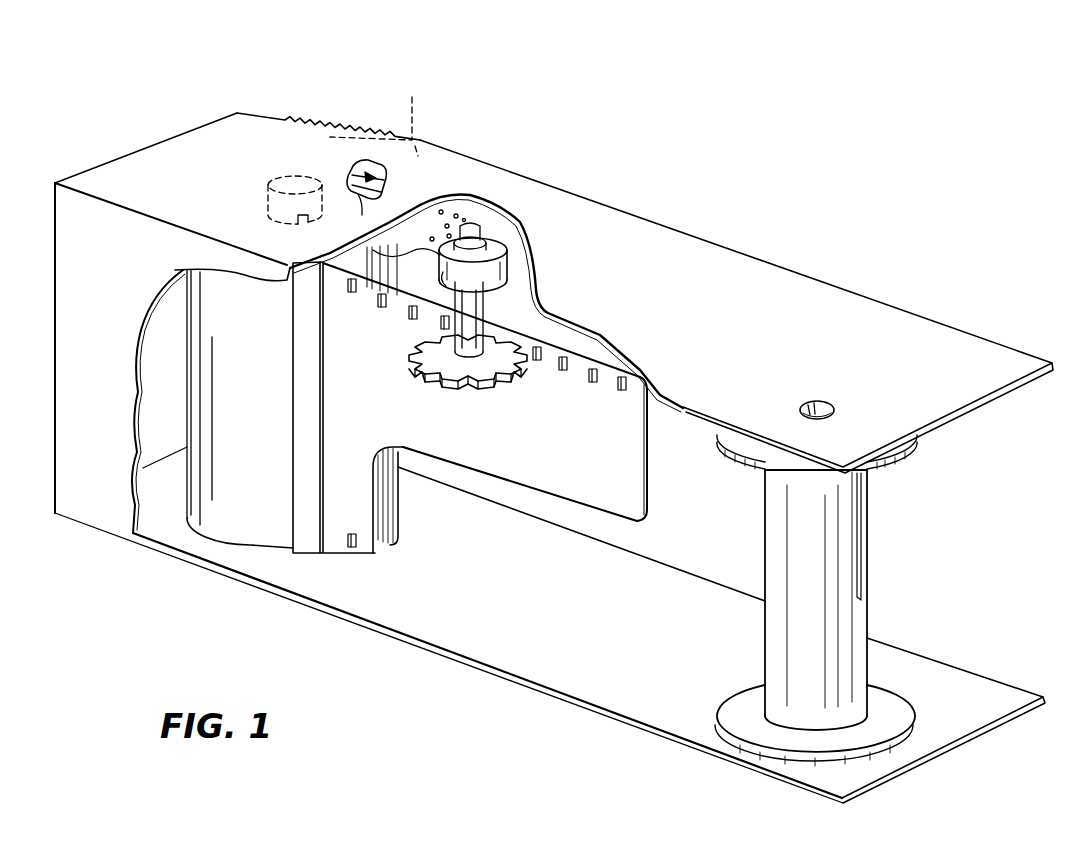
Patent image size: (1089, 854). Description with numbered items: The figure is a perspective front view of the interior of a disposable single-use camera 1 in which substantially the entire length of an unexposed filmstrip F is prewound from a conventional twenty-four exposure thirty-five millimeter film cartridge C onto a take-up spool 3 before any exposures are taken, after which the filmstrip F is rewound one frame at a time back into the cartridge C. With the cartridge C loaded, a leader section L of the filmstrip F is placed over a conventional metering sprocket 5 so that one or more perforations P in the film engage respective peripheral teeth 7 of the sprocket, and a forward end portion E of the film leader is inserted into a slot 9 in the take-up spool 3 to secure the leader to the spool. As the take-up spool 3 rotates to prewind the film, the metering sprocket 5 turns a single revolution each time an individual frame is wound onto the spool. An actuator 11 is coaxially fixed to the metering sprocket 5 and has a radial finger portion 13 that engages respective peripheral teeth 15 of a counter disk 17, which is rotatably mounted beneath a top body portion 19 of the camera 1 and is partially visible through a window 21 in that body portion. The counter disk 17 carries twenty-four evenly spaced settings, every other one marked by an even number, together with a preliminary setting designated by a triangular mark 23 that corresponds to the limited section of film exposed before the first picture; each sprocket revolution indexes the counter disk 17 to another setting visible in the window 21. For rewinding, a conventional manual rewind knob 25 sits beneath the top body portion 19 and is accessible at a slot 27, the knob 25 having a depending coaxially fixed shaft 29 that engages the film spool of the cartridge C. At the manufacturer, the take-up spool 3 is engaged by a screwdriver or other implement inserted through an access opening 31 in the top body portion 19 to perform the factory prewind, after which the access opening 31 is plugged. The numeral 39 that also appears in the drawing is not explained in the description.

The disposable single-use camera 1 is at (540, 160).
The take-up spool 3 is at (780, 617).
The metering sprocket 5 is at (437, 350).
The peripheral teeth 7 is at (454, 384).
The slot 9 is at (868, 517).
The actuator 11 is at (478, 247).
The radial finger portion 13 is at (505, 240).
The peripheral teeth 15 is at (472, 223).
The counter disk 17 is at (436, 218).
The top body portion 19 is at (745, 341).
The window 21 is at (348, 166).
The triangular mark 23 is at (363, 195).
The manual rewind knob 25 is at (317, 121).
The slot 27 is at (414, 100).
The shaft 29 is at (272, 203).
The access opening 31 is at (817, 401).
The bushing 39 is at (444, 277).
The film cartridge C is at (222, 402).
The forward end portion E is at (650, 467).
The filmstrip F is at (355, 497).
The leader section L is at (601, 463).
The perforations P is at (556, 370).